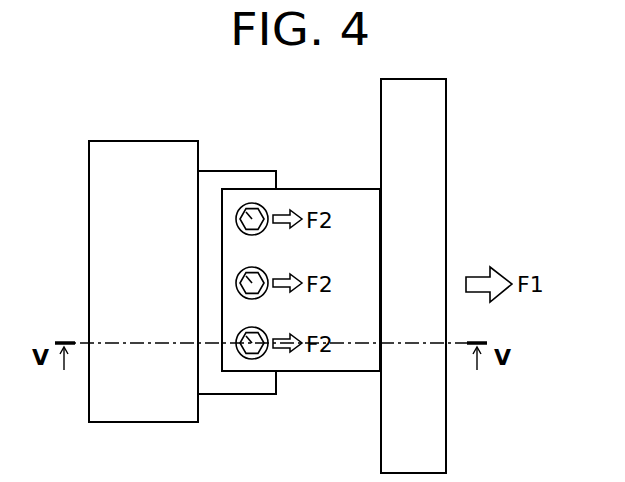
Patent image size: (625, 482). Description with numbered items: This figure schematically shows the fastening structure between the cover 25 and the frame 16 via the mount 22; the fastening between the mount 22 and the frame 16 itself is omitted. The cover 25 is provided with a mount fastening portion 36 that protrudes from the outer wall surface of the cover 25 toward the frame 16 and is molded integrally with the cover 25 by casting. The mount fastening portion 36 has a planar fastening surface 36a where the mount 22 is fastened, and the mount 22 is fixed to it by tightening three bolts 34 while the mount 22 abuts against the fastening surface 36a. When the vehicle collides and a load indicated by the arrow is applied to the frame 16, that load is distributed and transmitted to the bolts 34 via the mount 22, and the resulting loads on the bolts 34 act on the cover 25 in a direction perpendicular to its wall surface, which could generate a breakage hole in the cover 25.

The frame 16 is at (425, 121).
The mount 22 is at (324, 198).
The cover 25 is at (148, 155).
The bolts 34 is at (250, 203).
The mount fastening portion 36 is at (231, 237).
The fastening surface 36a is at (213, 182).